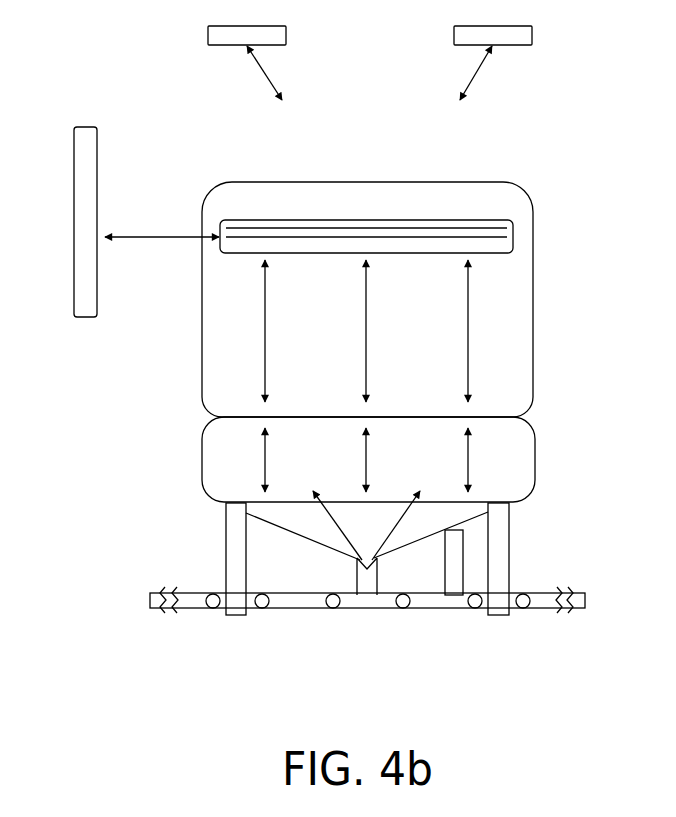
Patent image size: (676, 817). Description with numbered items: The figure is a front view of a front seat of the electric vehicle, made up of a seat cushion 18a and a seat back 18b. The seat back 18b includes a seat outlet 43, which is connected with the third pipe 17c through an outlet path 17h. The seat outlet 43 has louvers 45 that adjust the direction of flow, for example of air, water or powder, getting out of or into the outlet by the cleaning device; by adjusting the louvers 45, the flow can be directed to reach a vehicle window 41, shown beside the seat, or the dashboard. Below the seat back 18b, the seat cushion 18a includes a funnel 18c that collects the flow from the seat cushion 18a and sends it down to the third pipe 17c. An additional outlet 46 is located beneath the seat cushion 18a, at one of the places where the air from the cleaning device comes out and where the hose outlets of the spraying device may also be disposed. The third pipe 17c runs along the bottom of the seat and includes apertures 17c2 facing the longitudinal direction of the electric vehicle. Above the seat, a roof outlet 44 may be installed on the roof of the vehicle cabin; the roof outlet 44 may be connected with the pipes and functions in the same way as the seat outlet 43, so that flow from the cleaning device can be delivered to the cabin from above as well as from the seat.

The roof outlet 44 is at (208, 34).
The vehicle window 41 is at (76, 165).
The seat outlet 43 is at (228, 221).
The louvers 45 is at (291, 230).
The seat back 18b is at (520, 196).
The seat cushion 18a is at (210, 443).
The funnel 18c is at (302, 526).
The outlet 46 is at (356, 560).
The outlet path 17h is at (457, 551).
The third pipe 17c is at (297, 608).
The apertures 17c2 is at (406, 604).